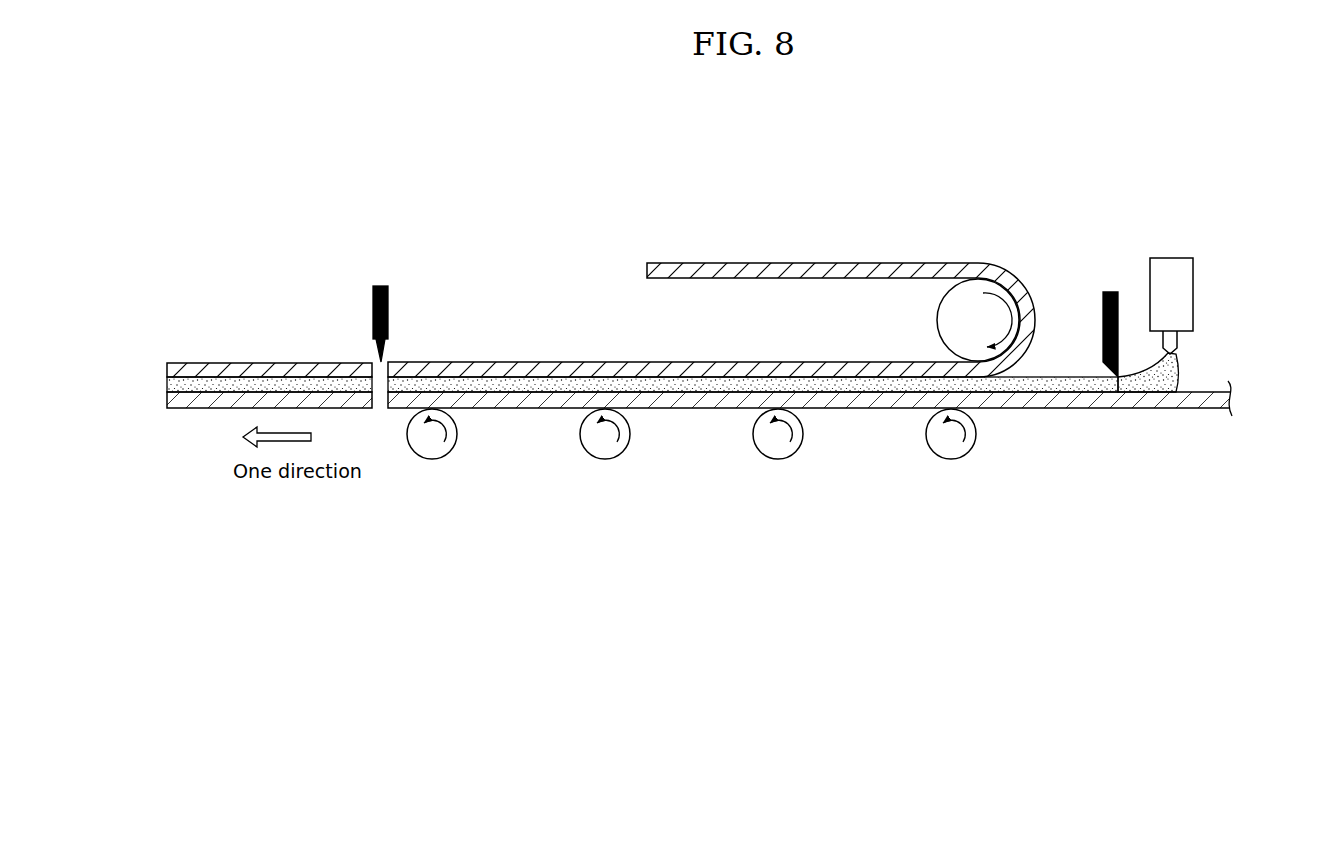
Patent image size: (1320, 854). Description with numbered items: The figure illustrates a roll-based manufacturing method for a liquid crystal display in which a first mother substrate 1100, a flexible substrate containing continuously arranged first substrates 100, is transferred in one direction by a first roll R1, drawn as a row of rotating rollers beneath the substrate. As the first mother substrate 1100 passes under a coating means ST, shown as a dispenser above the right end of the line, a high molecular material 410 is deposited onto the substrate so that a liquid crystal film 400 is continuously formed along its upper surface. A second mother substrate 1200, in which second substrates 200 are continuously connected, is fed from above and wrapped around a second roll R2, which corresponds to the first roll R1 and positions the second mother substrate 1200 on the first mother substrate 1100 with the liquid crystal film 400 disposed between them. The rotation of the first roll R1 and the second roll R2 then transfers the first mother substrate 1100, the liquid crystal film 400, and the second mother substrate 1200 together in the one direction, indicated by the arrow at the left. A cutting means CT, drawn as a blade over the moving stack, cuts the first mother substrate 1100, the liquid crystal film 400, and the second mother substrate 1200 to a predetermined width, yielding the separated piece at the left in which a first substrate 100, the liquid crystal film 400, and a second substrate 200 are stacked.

The first substrate 100 is at (196, 397).
The second substrate 200 is at (225, 362).
The liquid crystal film 400 is at (288, 385).
The high molecular material 410 is at (1160, 383).
The first mother substrate 1100 is at (1088, 400).
The second mother substrate 1200 is at (797, 272).
The cutting means CT is at (390, 301).
The coating means ST is at (1184, 287).
The first roll R1 is at (778, 451).
The second roll R2 is at (936, 319).